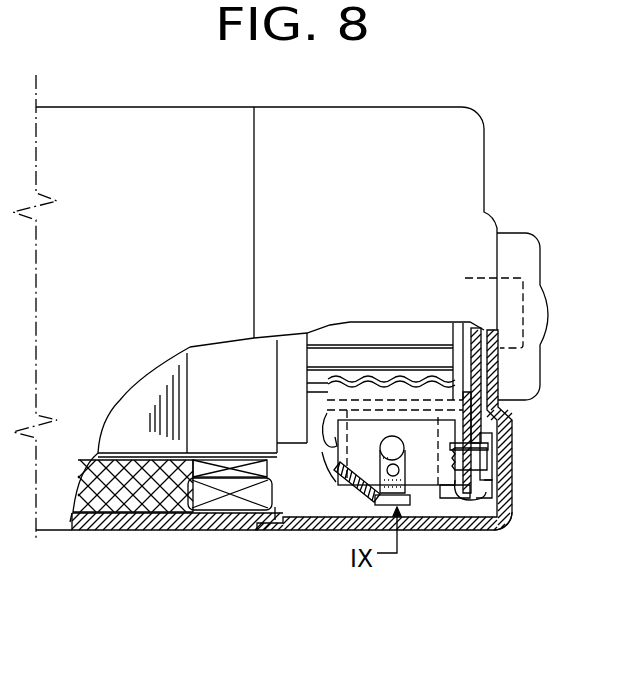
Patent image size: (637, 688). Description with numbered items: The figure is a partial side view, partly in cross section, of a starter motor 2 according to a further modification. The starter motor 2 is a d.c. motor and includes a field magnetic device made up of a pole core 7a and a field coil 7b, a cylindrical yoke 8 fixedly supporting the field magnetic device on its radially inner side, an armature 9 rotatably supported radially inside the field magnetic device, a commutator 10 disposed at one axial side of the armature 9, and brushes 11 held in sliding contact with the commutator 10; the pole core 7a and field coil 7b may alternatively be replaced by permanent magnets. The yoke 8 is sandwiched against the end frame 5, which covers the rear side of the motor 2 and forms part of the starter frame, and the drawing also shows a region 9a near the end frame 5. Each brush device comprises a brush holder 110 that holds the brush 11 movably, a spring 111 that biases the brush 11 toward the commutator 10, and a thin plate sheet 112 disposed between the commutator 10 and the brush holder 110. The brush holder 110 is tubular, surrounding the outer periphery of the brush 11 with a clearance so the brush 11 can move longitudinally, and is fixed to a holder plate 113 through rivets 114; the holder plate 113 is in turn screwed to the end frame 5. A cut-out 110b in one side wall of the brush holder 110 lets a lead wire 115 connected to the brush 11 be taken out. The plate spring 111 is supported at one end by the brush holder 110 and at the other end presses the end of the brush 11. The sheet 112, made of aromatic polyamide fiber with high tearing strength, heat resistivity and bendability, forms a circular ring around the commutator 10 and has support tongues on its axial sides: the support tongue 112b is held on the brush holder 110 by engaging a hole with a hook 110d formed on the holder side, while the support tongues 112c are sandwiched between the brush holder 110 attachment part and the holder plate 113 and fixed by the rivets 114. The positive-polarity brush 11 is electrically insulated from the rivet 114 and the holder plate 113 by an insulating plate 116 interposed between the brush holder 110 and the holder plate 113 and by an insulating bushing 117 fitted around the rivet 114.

The starter motor 2 is at (103, 96).
The end frame 5 is at (478, 492).
The pole core 7a is at (85, 523).
The field coil 7b is at (220, 504).
The yoke 8 is at (105, 523).
The armature 9 is at (137, 443).
The side wall portion 9a is at (483, 330).
The commutator 10 is at (400, 335).
The brush 11 is at (418, 485).
The brush holder 110 is at (436, 468).
The cut-out 110b is at (383, 378).
The hook 110d is at (335, 477).
The spring 111 is at (373, 503).
The sheet 112 is at (327, 413).
The support tongue 112b is at (327, 440).
The support tongue 112c is at (502, 517).
The holder plate 113 is at (478, 390).
The rivet 114 is at (448, 488).
The lead wire 115 is at (337, 488).
The insulating plate 116 is at (462, 493).
The insulating bushing 117 is at (486, 474).